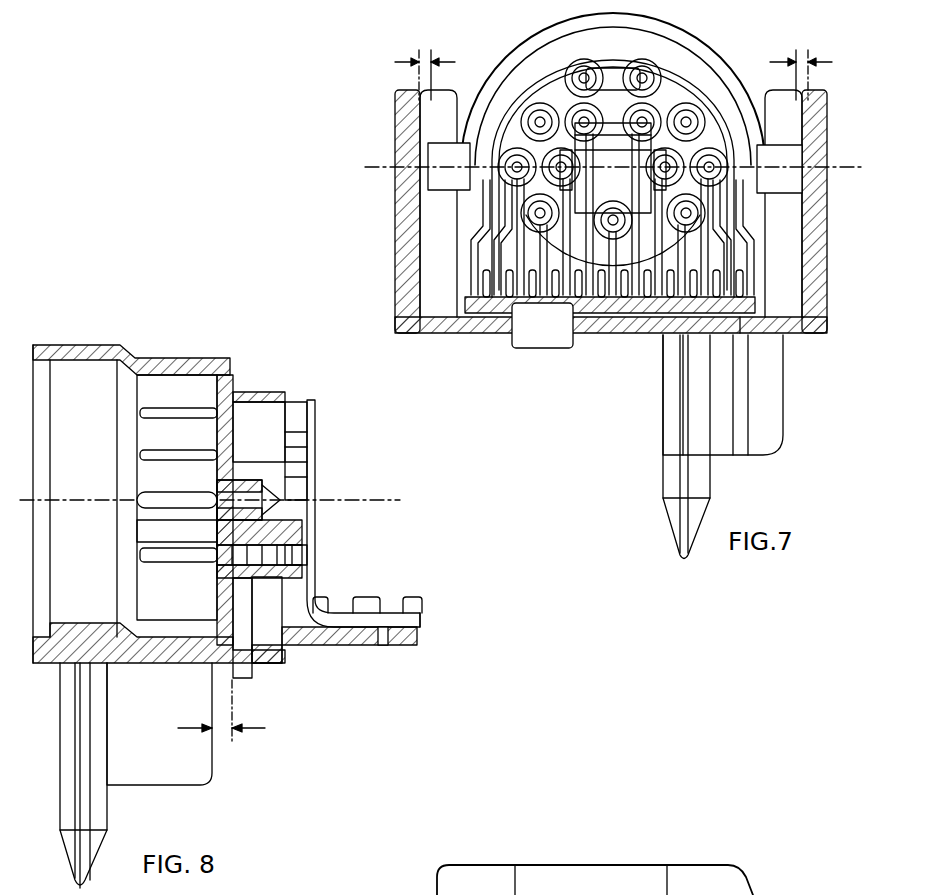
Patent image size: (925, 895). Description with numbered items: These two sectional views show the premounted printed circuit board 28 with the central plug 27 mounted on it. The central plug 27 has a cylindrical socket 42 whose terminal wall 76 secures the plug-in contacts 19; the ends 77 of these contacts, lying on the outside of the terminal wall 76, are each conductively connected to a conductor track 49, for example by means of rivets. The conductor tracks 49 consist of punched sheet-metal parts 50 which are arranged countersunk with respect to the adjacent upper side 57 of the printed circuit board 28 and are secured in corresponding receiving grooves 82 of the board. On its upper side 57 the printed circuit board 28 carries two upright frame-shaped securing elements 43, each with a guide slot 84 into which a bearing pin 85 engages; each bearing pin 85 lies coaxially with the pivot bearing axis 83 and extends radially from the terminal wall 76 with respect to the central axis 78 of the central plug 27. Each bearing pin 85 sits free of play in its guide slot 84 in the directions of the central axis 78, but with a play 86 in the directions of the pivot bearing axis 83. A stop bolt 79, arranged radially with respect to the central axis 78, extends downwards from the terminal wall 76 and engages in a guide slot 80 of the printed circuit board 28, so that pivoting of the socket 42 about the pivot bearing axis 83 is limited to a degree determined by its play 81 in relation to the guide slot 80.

In FIG. 8, the plug-in contacts 19 is at (167, 557).
In FIG. 8, the central plug 27 is at (260, 370).
In FIG. 7, the printed circuit board 28 is at (788, 340).
In FIG. 8, the printed circuit board 28 is at (145, 665).
In FIG. 8, the socket 42 is at (160, 358).
In FIG. 7, the securing elements 43 is at (398, 92).
In FIG. 8, the conductor track 49 is at (322, 585).
In FIG. 8, the punched sheet-metal parts 50 is at (382, 645).
In FIG. 7, the upper side 57 is at (780, 318).
In FIG. 8, the upper side 57 is at (415, 600).
In FIG. 8, the terminal wall 76 is at (285, 400).
In FIG. 8, the ends 77 is at (300, 420).
In FIG. 8, the central axis 78 is at (70, 500).
In FIG. 8, the stop bolt 79 is at (250, 672).
In FIG. 8, the guide slot 80 is at (200, 680).
In FIG. 8, the play 81 is at (228, 735).
In FIG. 8, the receiving grooves 82 is at (420, 617).
In FIG. 7, the pivot bearing axis 83 is at (372, 172).
In FIG. 7, the guide slot 84 is at (445, 95).
In FIG. 7, the bearing pin 85 is at (435, 143).
In FIG. 7, the play 86 is at (418, 55).